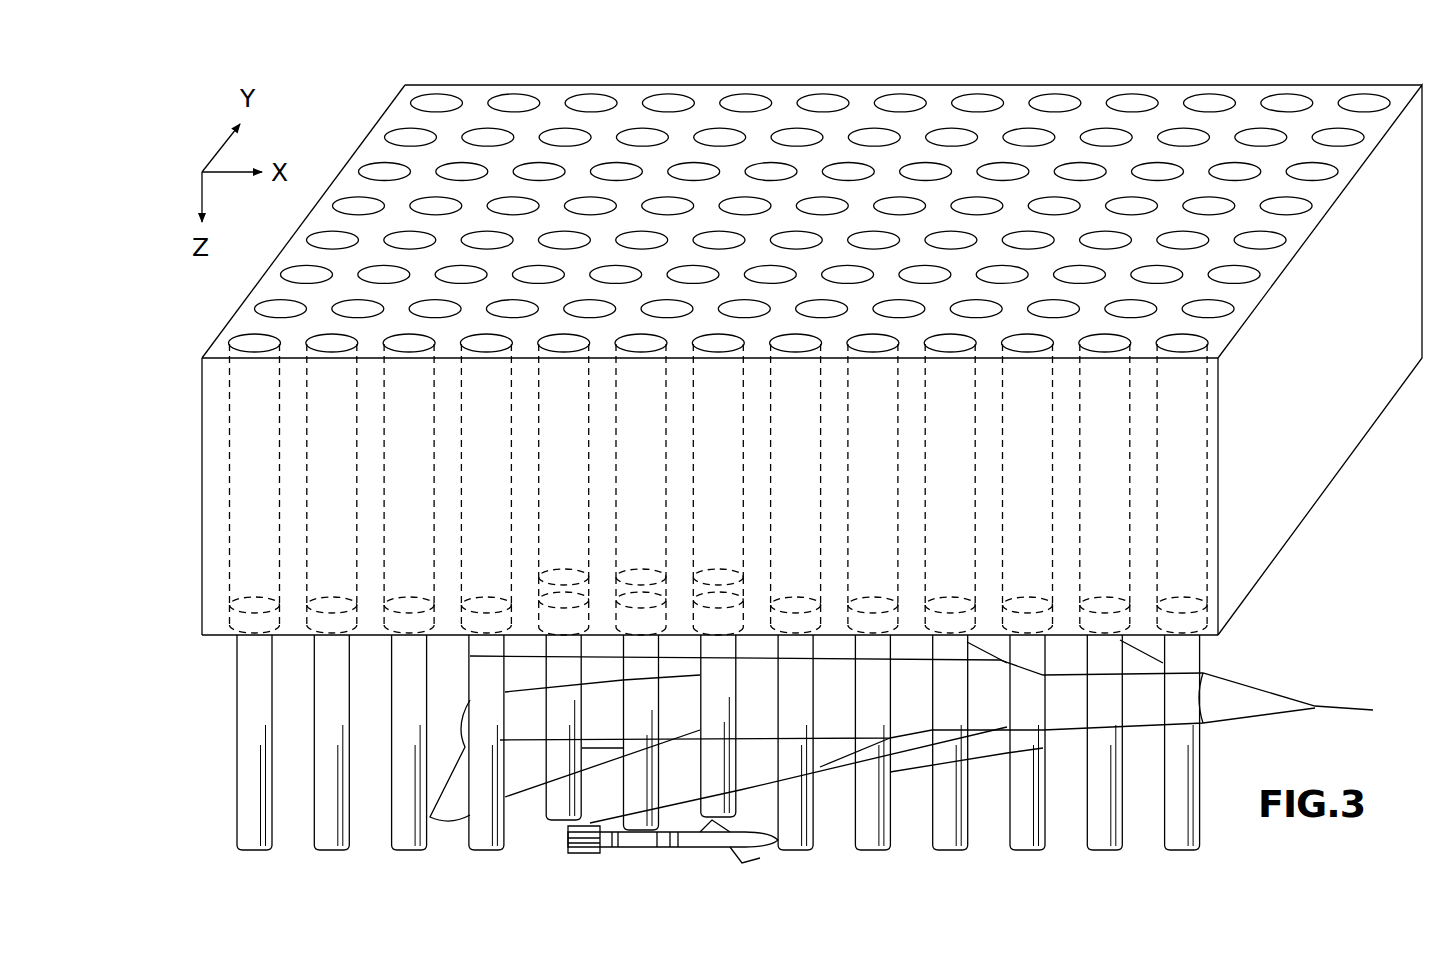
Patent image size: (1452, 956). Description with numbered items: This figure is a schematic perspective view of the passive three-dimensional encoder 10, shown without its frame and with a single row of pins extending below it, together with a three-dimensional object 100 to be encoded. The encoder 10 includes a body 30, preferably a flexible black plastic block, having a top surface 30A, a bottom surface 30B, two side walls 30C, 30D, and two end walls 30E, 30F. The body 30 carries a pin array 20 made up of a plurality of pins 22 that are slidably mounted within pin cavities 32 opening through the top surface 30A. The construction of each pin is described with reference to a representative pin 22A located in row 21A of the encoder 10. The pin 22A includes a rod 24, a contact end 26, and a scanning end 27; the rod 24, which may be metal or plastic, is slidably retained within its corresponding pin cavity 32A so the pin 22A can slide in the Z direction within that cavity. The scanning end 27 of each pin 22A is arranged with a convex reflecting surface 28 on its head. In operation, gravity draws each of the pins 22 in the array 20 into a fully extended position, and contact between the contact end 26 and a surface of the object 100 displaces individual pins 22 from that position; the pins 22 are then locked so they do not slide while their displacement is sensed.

The passive 3D encoder 10 is at (352, 93).
The pin array 20 is at (370, 153).
The row 21A is at (195, 340).
The pins 22 is at (389, 818).
The pin 22A is at (238, 813).
The rod 24 is at (238, 742).
The contact end 26 is at (253, 852).
The scanning end 27 is at (232, 606).
The convex reflecting surface 28 is at (258, 600).
The body 30 is at (472, 83).
The top surface 30A is at (785, 110).
The bottom surface 30B is at (218, 637).
The side wall 30C is at (1081, 92).
The side wall 30D is at (1190, 435).
The end wall 30E is at (252, 292).
The end wall 30F is at (1302, 497).
The pin cavities 32 is at (590, 100).
The pin cavity 32A is at (230, 462).
The 3D object 100 is at (1272, 688).